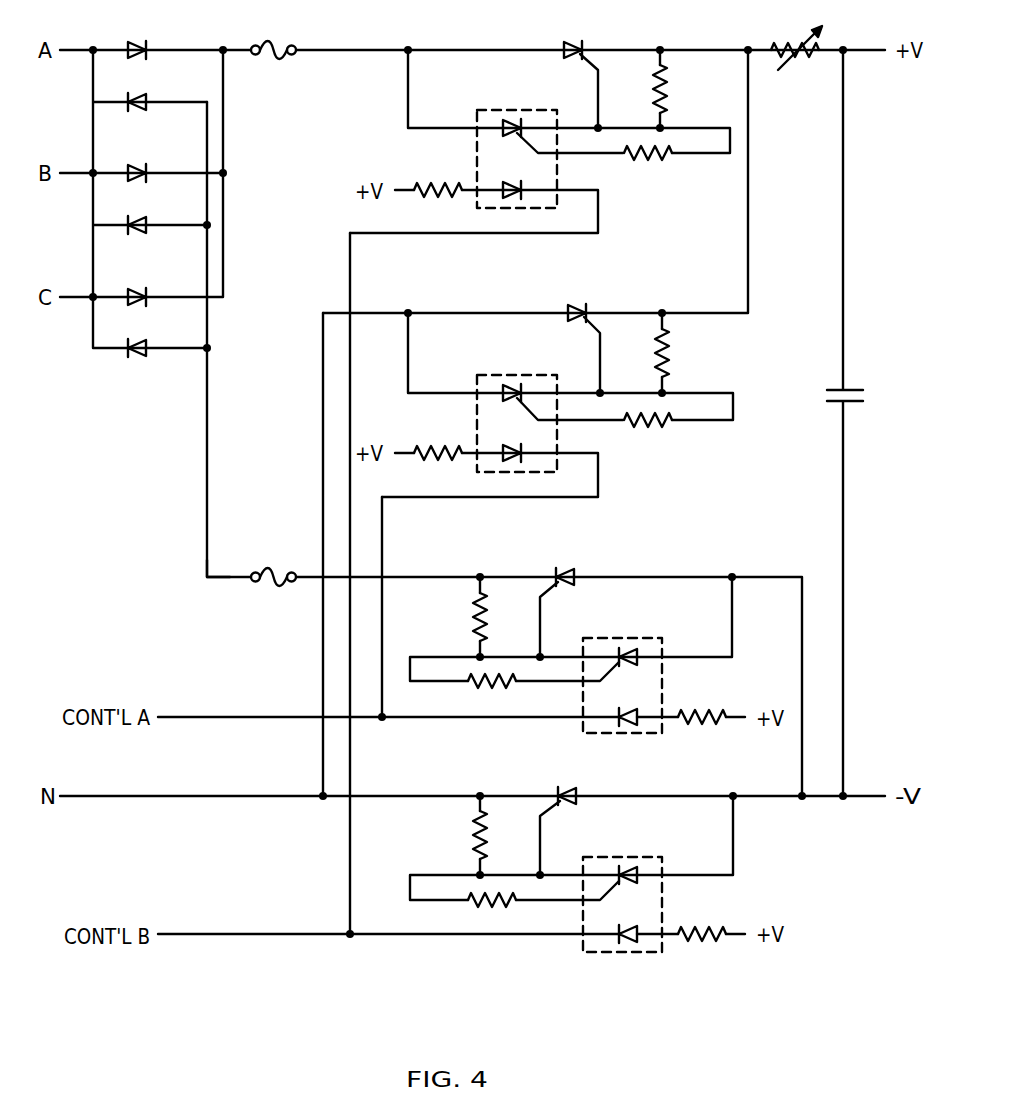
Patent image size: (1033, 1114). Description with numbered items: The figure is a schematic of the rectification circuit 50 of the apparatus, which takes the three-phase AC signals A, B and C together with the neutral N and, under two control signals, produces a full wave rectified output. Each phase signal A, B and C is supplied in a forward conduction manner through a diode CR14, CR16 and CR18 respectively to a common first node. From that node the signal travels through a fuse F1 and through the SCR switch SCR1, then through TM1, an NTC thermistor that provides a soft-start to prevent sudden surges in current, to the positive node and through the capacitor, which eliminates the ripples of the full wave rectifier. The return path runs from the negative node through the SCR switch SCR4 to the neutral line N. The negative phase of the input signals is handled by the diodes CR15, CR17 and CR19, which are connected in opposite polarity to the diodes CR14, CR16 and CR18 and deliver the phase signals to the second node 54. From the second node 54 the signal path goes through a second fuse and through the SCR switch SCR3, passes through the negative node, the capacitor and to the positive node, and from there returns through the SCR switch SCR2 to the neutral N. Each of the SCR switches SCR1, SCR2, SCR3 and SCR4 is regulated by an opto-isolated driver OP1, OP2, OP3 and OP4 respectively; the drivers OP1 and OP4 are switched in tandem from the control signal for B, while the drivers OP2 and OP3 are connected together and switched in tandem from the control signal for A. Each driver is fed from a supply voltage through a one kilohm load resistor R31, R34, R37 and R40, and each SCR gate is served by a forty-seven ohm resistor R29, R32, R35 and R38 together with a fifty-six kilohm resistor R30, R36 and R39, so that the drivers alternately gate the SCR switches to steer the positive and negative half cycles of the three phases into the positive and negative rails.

The diode CR14 is at (136, 37).
The diode CR15 is at (136, 88).
The diode CR16 is at (136, 159).
The diode CR17 is at (136, 211).
The diode CR18 is at (136, 283).
The diode CR19 is at (136, 334).
The fuse F1 is at (273, 300).
The rectification circuit 50 is at (289, 241).
The second node 54 is at (222, 580).
The SCR switch SCR1 is at (575, 71).
The SCR switch SCR2 is at (576, 335).
The SCR switch SCR3 is at (564, 599).
The SCR switch SCR4 is at (564, 817).
The opto-isolated driver OP1 is at (517, 146).
The opto-isolated driver OP2 is at (517, 410).
The opto-isolated driver OP3 is at (622, 672).
The opto-isolated driver OP4 is at (622, 890).
The resistor R29 is at (682, 89).
The resistor R30 is at (648, 170).
The load resistor R31 is at (428, 176).
The resistor R32 is at (683, 353).
The load resistor R34 is at (428, 440).
The resistor R35 is at (550, 535).
The resistor R36 is at (492, 697).
The load resistor R37 is at (691, 703).
The resistor R38 is at (458, 835).
The resistor R39 is at (492, 915).
The load resistor R40 is at (691, 922).
The NTC thermistor TM1 is at (796, 40).